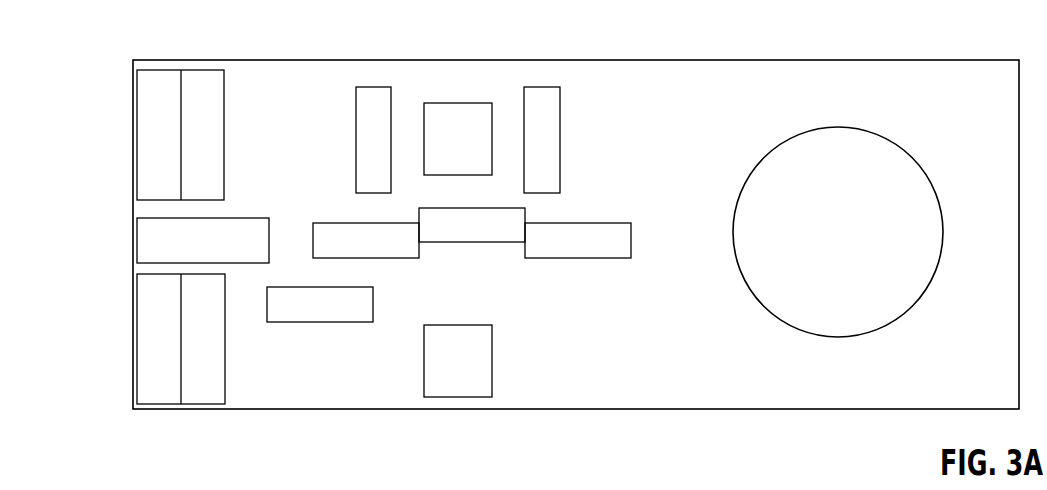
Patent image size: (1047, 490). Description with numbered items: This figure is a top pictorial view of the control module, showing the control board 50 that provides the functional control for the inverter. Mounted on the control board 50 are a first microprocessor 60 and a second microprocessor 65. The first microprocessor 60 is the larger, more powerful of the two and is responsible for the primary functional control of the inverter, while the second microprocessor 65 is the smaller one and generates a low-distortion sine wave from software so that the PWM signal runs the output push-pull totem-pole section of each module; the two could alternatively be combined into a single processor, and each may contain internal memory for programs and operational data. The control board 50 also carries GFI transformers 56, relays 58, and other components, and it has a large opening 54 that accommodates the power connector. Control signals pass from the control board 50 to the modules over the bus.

The control board 50 is at (86, 57).
The large opening 54 is at (838, 232).
The GFI transformers 56 is at (383, 113).
The relays 58 is at (207, 78).
The first microprocessor 60 is at (471, 113).
The second microprocessor 65 is at (470, 386).